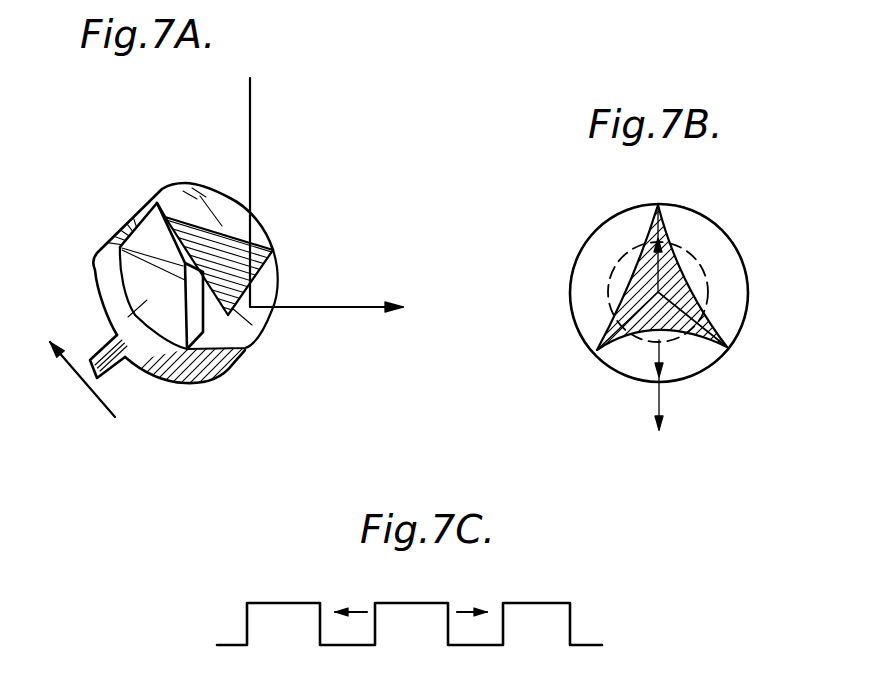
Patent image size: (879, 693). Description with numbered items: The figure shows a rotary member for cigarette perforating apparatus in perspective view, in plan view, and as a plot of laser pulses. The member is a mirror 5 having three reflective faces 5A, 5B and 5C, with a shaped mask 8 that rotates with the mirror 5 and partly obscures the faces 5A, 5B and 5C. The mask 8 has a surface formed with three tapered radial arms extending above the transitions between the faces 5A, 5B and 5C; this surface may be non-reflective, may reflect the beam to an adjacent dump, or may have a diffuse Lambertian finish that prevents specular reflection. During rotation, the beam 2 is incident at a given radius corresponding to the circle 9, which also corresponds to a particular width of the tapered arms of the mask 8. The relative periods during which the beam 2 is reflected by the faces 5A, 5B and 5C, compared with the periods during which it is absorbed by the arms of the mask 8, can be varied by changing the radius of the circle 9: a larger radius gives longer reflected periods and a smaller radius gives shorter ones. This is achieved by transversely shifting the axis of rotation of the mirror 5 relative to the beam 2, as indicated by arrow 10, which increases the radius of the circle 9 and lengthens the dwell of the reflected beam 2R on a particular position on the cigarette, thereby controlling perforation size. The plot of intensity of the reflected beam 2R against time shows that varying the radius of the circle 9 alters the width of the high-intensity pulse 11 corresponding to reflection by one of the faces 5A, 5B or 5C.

In FIG. 7A, the beam 2 is at (251, 103).
In FIG. 7B, the beam 2 is at (657, 347).
In FIG. 7A, the reflected beam 2R is at (315, 307).
In FIG. 7B, the reflected beam 2R is at (663, 400).
In FIG. 7A, the mirror 5 is at (108, 280).
In FIG. 7A, the reflective face 5A is at (203, 187).
In FIG. 7B, the reflective face 5A is at (727, 312).
In FIG. 7A, the reflective face 5B is at (238, 335).
In FIG. 7B, the reflective face 5B is at (693, 363).
In FIG. 7A, the reflective face 5C is at (180, 325).
In FIG. 7B, the reflective face 5C is at (590, 278).
In FIG. 7A, the shaped mask 8 is at (271, 253).
In FIG. 7B, the shaped mask 8 is at (688, 255).
In FIG. 7B, the circle 9 is at (703, 268).
In FIG. 7A, the arrow 10 is at (98, 402).
In FIG. 7C, the pulse 11 is at (553, 601).